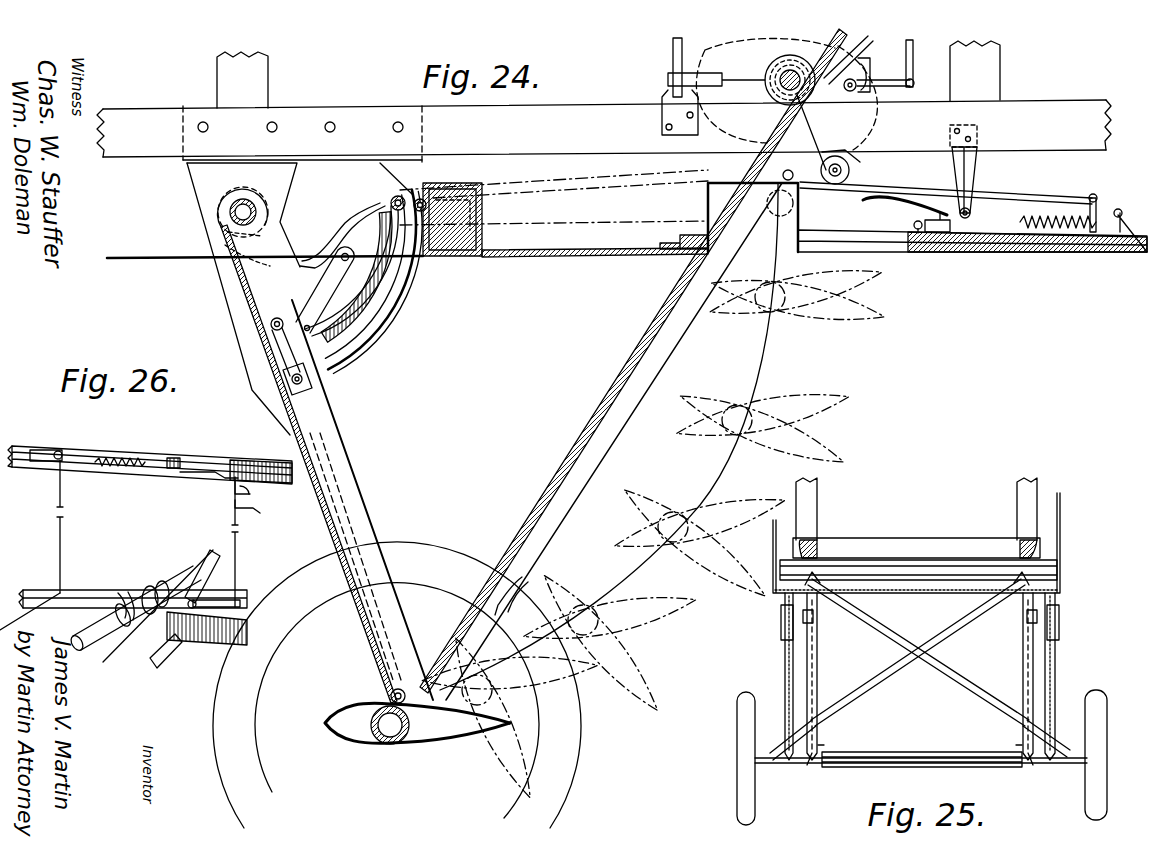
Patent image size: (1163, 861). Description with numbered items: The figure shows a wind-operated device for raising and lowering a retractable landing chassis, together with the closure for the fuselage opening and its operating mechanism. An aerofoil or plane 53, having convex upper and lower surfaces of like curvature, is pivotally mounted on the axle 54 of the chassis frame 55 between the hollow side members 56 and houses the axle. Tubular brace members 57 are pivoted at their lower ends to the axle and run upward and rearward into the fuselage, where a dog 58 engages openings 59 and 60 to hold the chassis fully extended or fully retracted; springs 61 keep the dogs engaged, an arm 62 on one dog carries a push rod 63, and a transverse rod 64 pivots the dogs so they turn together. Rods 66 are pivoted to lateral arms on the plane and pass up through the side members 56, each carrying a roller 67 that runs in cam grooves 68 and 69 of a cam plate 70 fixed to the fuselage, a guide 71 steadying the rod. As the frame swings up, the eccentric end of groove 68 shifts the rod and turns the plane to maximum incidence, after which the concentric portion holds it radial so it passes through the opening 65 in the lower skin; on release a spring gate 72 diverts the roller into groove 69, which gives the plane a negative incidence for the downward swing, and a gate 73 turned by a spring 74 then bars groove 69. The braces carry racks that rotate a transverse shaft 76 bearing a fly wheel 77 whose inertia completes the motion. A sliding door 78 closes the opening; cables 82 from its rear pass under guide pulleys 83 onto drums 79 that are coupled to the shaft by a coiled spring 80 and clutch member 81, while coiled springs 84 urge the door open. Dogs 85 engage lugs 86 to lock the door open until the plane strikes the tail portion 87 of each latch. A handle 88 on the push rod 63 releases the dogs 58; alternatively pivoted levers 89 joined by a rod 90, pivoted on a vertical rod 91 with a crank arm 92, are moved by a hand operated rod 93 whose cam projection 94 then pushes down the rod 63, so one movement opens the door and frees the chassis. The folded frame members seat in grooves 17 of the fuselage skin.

In FIG. 24, the grooves 17 is at (470, 240).
In FIG. 24, the plane 53 is at (335, 728).
In FIG. 25, the plane 53 is at (900, 753).
In FIG. 24, the axle 54 is at (385, 744).
In FIG. 25, the axle 54 is at (821, 766).
In FIG. 25, the chassis frame 55 is at (917, 649).
In FIG. 24, the side members 56 is at (518, 166).
In FIG. 25, the side members 56 is at (816, 662).
In FIG. 24, the tubular brace members 57 is at (580, 432).
In FIG. 25, the tubular brace members 57 is at (782, 658).
In FIG. 26, the tubular brace members 57 is at (165, 660).
In FIG. 24, the dog 58 is at (872, 52).
In FIG. 26, the dog 58 is at (217, 575).
In FIG. 24, the opening 59 is at (841, 70).
In FIG. 24, the opening 60 is at (522, 608).
In FIG. 24, the springs 61 is at (870, 80).
In FIG. 26, the springs 61 is at (225, 598).
In FIG. 24, the arm 62 is at (870, 95).
In FIG. 26, the arm 62 is at (210, 650).
In FIG. 24, the push rod 63 is at (913, 58).
In FIG. 26, the push rod 63 is at (234, 536).
In FIG. 24, the transverse rod 64 is at (862, 110).
In FIG. 26, the transverse rod 64 is at (108, 660).
In FIG. 24, the opening 65 is at (880, 250).
In FIG. 24, the rods 66 is at (318, 420).
In FIG. 25, the rods 66 is at (818, 683).
In FIG. 24, the roller 67 is at (382, 213).
In FIG. 25, the roller 67 is at (813, 625).
In FIG. 24, the cam groove 68 is at (366, 313).
In FIG. 24, the cam groove 69 is at (366, 268).
In FIG. 24, the cam plate 70 is at (357, 340).
In FIG. 25, the cam plate 70 is at (785, 632).
In FIG. 24, the guide 71 is at (262, 400).
In FIG. 24, the spring gate 72 is at (405, 260).
In FIG. 24, the gate 73 is at (326, 285).
In FIG. 24, the spring 74 is at (312, 265).
In FIG. 24, the transverse shaft 76 is at (806, 132).
In FIG. 26, the transverse shaft 76 is at (73, 643).
In FIG. 24, the fly wheel 77 is at (720, 141).
In FIG. 24, the sliding door 78 is at (1040, 250).
In FIG. 24, the drums 79 is at (783, 92).
In FIG. 24, the coiled spring 80 is at (765, 72).
In FIG. 26, the coiled spring 80 is at (113, 606).
In FIG. 26, the clutch member 81 is at (128, 628).
In FIG. 24, the cables 82 is at (940, 195).
In FIG. 24, the guide pulleys 83 is at (849, 170).
In FIG. 24, the coiled springs 84 is at (1050, 210).
In FIG. 24, the dogs 85 is at (958, 240).
In FIG. 24, the lugs 86 is at (945, 250).
In FIG. 24, the tail portion 87 is at (920, 210).
In FIG. 26, the handle 88 is at (262, 505).
In FIG. 24, the pivoted levers 89 is at (765, 90).
In FIG. 26, the pivoted levers 89 is at (112, 605).
In FIG. 24, the rod 90 is at (672, 78).
In FIG. 24, the vertical rod 91 is at (673, 50).
In FIG. 26, the vertical rod 91 is at (59, 542).
In FIG. 26, the crank arm 92 is at (45, 463).
In FIG. 26, the hand operated rod 93 is at (112, 467).
In FIG. 26, the cam projection 94 is at (212, 478).